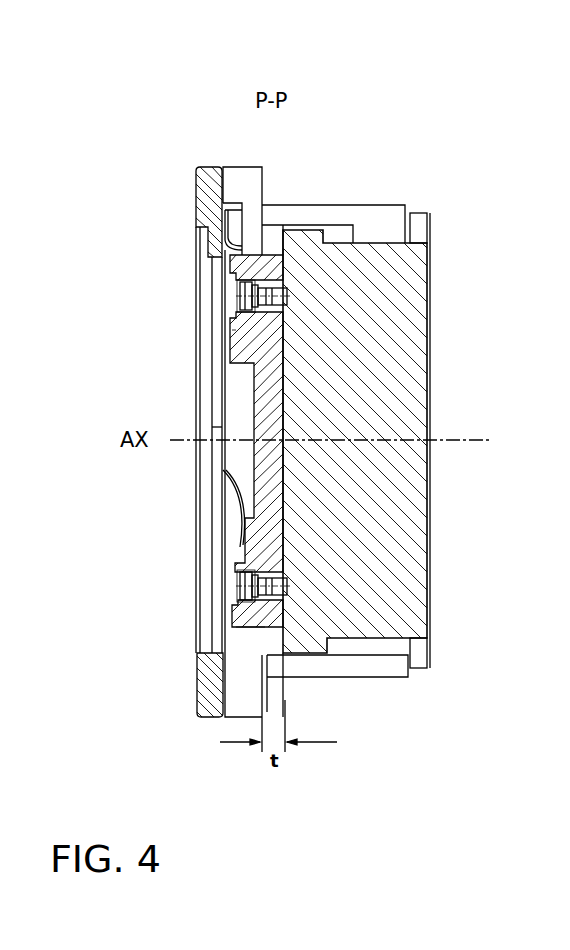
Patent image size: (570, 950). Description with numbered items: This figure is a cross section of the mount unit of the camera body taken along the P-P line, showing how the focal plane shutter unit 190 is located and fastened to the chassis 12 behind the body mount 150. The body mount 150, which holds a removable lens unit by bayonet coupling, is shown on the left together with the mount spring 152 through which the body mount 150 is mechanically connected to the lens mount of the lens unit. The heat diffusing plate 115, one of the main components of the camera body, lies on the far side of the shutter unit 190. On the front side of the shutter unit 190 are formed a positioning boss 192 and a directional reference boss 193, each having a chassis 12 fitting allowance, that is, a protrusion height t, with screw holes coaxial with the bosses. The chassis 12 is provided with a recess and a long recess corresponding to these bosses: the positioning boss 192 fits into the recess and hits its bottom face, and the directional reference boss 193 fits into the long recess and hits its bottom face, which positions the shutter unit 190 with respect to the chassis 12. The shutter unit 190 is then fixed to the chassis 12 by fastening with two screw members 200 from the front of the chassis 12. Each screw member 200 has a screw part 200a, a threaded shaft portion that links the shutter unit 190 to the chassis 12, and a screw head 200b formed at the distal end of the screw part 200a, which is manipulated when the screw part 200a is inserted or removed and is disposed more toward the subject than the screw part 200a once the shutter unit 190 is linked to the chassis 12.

The chassis 12 is at (240, 265).
The heat diffusing plate 115 is at (418, 224).
The body mount 150 is at (210, 187).
The mount spring 152 is at (230, 223).
The shutter unit 190 is at (333, 277).
The positioning boss 192 is at (262, 290).
The directional reference boss 193 is at (262, 579).
The screw member 200 is at (82, 293).
The screw part 200a is at (243, 293).
The screw head 200b is at (232, 330).